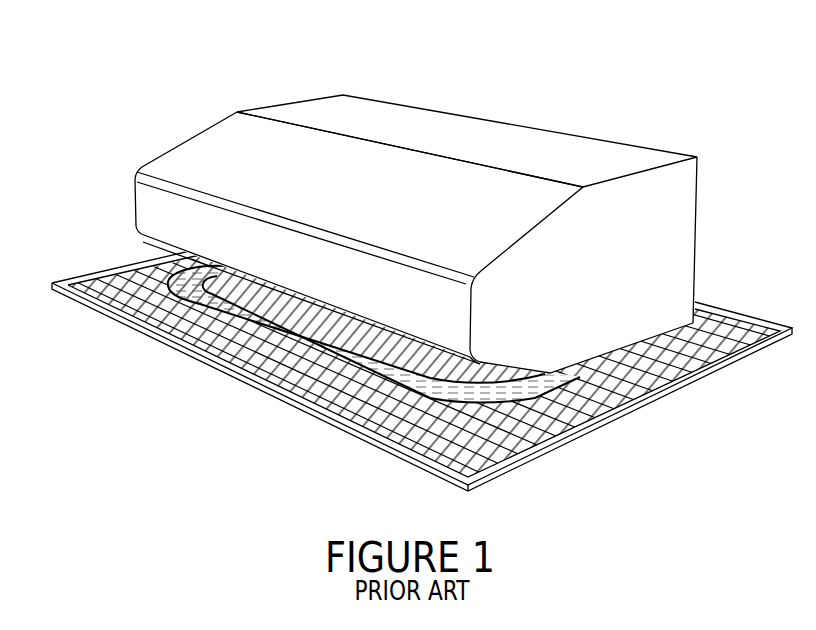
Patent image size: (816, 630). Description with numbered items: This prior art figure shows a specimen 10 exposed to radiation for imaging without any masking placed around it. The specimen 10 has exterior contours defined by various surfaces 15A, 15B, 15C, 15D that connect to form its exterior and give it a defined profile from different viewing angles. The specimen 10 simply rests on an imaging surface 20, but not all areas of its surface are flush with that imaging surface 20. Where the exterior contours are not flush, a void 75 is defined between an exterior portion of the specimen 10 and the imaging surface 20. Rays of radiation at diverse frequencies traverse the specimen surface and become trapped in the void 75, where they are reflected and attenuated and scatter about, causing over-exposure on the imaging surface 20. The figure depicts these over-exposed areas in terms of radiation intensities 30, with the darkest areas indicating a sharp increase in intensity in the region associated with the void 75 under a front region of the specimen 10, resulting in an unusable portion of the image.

The specimen 10 is at (444, 253).
The surface 15A is at (423, 123).
The surface 15B is at (323, 147).
The surface 15C is at (458, 283).
The surface 15D is at (390, 300).
The imaging surface 20 is at (418, 350).
The radiation intensities 30 is at (130, 300).
The void 75 is at (325, 318).